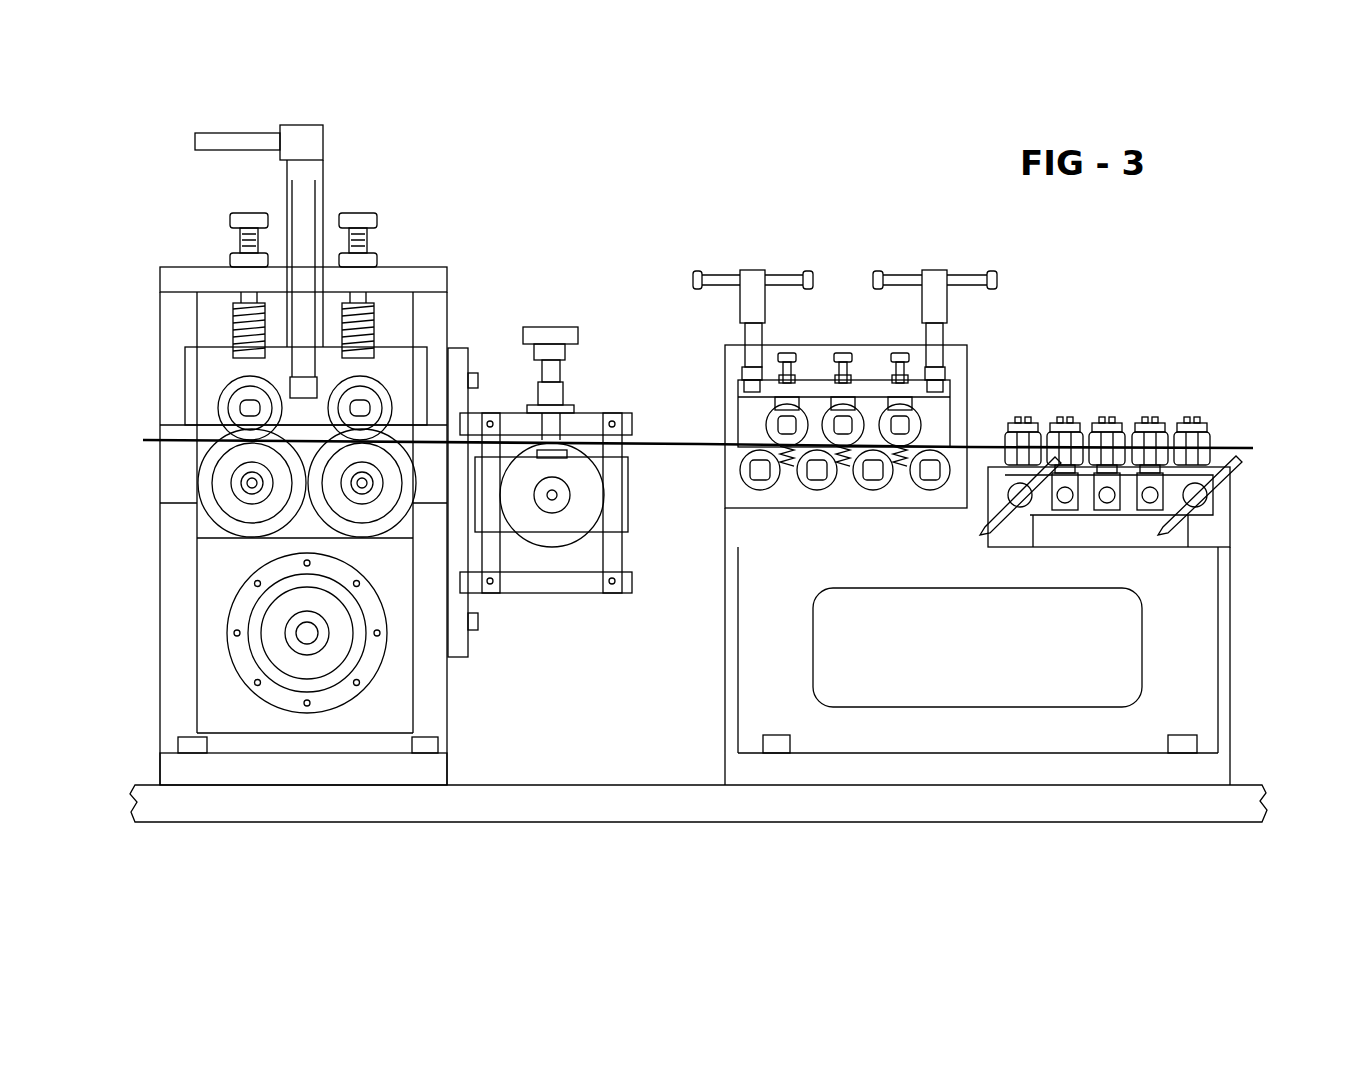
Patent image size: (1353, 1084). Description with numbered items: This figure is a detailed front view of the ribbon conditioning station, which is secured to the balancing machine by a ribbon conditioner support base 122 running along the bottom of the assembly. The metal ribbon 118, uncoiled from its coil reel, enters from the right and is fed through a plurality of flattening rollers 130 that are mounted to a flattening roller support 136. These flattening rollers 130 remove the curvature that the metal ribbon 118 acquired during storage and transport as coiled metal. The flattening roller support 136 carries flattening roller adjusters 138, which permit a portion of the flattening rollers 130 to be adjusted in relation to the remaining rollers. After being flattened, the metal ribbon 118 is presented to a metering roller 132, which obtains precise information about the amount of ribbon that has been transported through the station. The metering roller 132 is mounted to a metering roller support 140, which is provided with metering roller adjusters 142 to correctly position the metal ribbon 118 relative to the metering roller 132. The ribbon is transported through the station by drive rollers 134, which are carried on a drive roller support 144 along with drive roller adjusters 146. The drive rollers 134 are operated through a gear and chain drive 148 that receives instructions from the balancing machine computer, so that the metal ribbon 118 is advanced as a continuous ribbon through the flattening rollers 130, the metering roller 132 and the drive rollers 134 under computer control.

The metal ribbon 118 is at (1235, 447).
The ribbon conditioner support base 122 is at (1147, 812).
The flattening rollers 130 is at (923, 417).
The metering roller 132 is at (555, 543).
The drive rollers 134 is at (397, 458).
The flattening roller support 136 is at (885, 549).
The flattening roller adjusters 138 is at (938, 280).
The metering roller support 140 is at (602, 590).
The metering roller adjusters 142 is at (553, 328).
The drive roller support 144 is at (227, 558).
The drive roller adjusters 146 is at (360, 213).
The gear and chain drive 148 is at (280, 638).